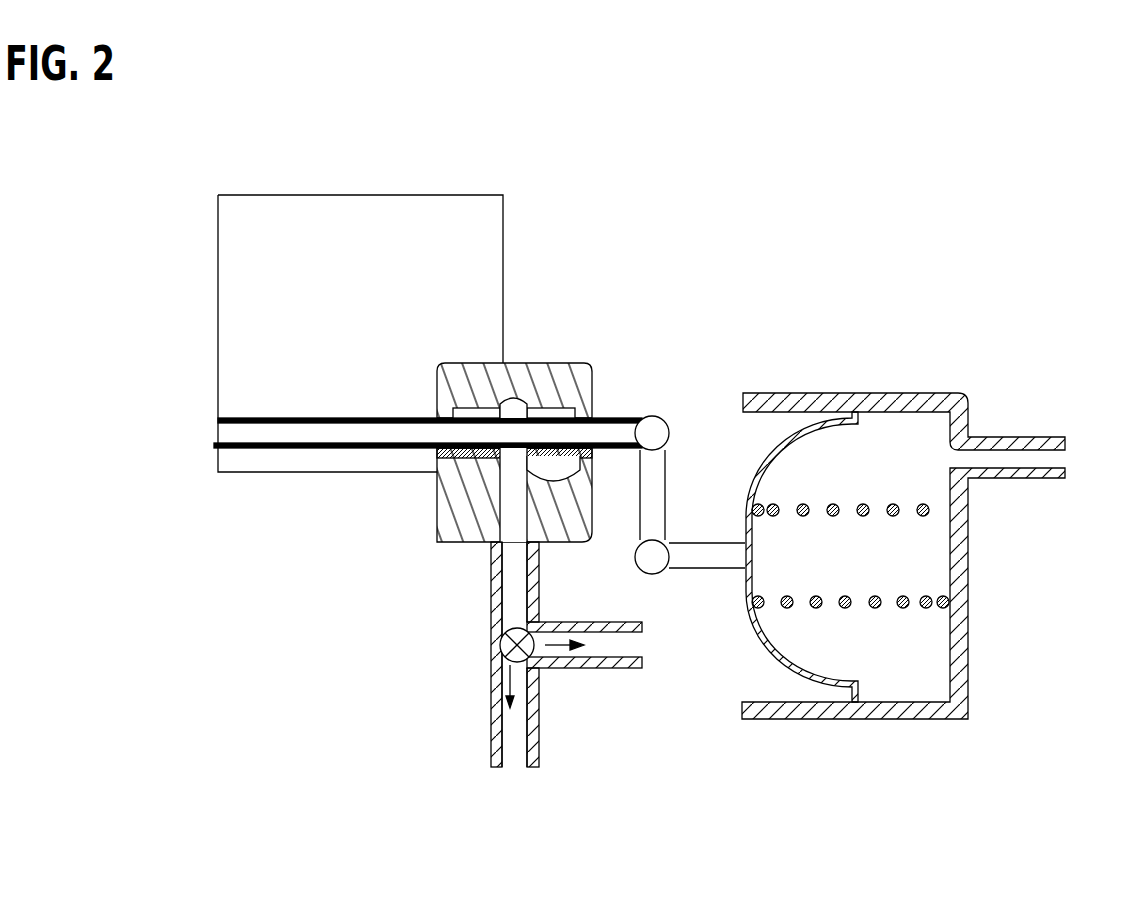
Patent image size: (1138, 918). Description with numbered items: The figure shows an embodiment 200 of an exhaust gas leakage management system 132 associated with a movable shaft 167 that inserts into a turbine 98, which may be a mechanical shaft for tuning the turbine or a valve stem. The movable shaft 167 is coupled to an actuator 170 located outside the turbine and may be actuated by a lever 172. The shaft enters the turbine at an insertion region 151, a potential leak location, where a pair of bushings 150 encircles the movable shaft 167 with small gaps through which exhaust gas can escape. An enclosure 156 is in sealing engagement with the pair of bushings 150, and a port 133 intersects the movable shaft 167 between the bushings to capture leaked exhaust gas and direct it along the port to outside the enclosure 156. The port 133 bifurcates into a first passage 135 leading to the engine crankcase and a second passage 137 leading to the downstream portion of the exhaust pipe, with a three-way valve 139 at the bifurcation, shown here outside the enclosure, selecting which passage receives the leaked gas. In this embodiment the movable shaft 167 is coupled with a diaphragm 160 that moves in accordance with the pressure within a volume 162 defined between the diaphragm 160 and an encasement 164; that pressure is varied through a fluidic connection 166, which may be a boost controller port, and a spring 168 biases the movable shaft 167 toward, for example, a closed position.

The embodiment 200 is at (268, 125).
The turbine 98 is at (277, 242).
The exhaust gas leakage management system 132 is at (549, 318).
The pair of bushings 150 is at (572, 428).
The insertion region 151 is at (455, 387).
The enclosure 156 is at (592, 378).
The port 133 is at (532, 480).
The first passage 135 is at (492, 732).
The second passage 137 is at (568, 622).
The valve 139 is at (506, 632).
The movable shaft 167 is at (410, 438).
The lever 172 is at (665, 487).
The actuator 170 is at (877, 500).
The encasement 164 is at (855, 393).
The fluidic connection 166 is at (1060, 450).
The diaphragm 160 is at (767, 458).
The volume 162 is at (898, 469).
The spring 168 is at (907, 597).